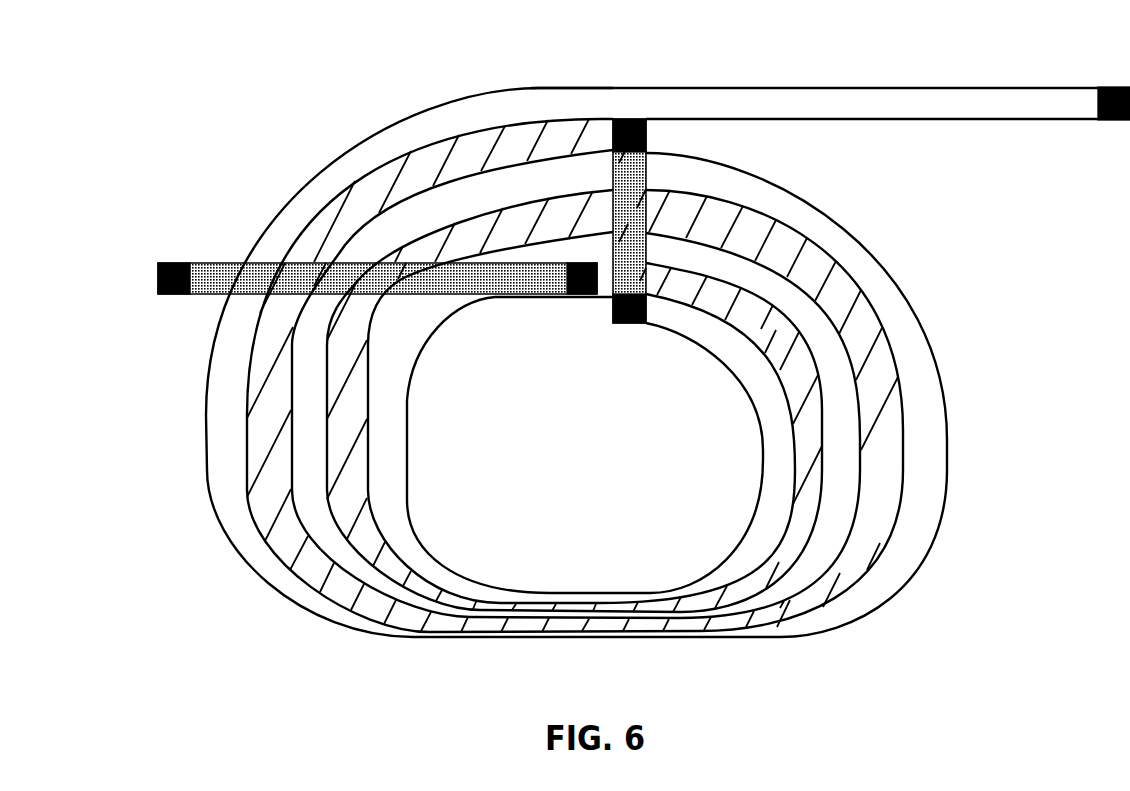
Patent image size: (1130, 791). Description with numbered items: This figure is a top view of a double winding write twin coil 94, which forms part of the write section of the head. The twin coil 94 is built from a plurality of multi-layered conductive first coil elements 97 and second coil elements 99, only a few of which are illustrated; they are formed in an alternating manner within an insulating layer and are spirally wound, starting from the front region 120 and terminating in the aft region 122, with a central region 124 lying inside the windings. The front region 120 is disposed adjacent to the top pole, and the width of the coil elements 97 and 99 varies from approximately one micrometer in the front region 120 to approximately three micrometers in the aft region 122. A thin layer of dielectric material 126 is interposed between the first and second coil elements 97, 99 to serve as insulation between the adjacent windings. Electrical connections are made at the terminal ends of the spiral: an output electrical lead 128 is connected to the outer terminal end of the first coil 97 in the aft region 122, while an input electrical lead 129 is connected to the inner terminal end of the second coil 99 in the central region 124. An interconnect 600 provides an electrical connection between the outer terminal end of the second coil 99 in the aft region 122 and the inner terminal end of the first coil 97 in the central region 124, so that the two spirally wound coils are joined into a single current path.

The write twin coil 94 is at (582, 48).
The output electrical lead 128 is at (1113, 87).
The aft region 122 is at (648, 127).
The input electrical lead 129 is at (180, 263).
The interconnect 600 is at (612, 208).
The dielectric material 126 is at (826, 212).
The second coil element 99 is at (883, 417).
The first coil element 97 is at (917, 446).
The central region 124 is at (595, 455).
The front region 120 is at (624, 381).